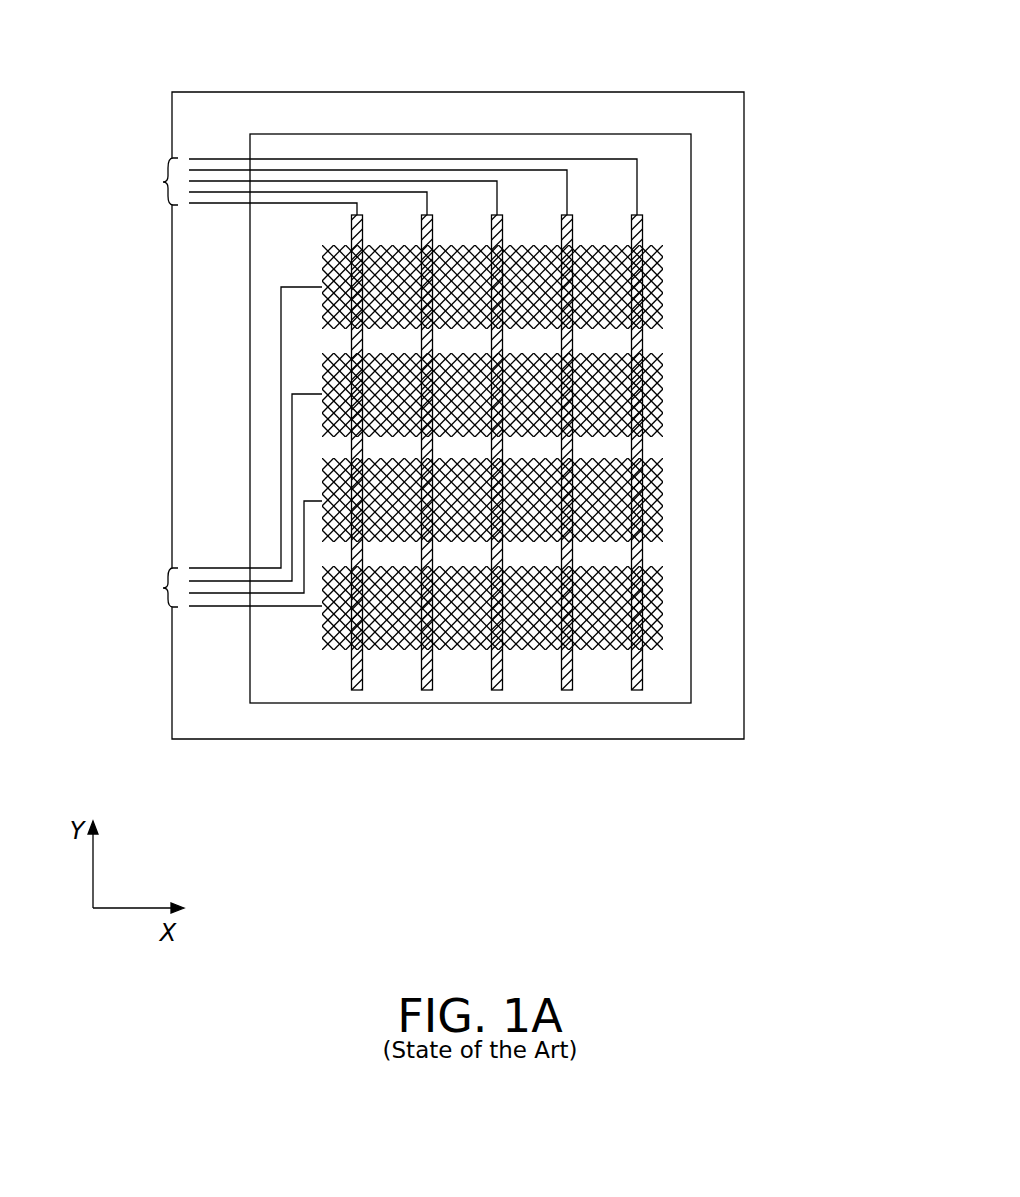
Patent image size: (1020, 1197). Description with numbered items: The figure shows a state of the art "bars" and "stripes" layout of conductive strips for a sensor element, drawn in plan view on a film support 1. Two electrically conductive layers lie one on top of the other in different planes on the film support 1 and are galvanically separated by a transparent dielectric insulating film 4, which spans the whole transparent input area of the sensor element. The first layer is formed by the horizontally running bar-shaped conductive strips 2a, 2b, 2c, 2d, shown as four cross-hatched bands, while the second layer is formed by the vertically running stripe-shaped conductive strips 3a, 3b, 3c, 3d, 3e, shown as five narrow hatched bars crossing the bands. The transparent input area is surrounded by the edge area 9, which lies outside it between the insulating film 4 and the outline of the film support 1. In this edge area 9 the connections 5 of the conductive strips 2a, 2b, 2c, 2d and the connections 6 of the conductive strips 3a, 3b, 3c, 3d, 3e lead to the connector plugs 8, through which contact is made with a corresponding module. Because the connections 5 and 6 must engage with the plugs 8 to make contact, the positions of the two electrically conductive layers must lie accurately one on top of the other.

The film support 1 is at (707, 739).
The edge area 9 is at (703, 105).
The transparent dielectric insulating film 4 is at (682, 160).
The conductive strip 2a is at (663, 287).
The conductive strip 2b is at (663, 393).
The conductive strip 2c is at (663, 501).
The conductive strip 2d is at (663, 606).
The conductive strip 3a is at (357, 690).
The conductive strip 3b is at (427, 690).
The conductive strip 3c is at (497, 690).
The conductive strip 3d is at (567, 690).
The conductive strip 3e is at (637, 690).
The connections 5 is at (280, 430).
The connections 6 is at (378, 168).
The connector plugs 8 is at (163, 182).